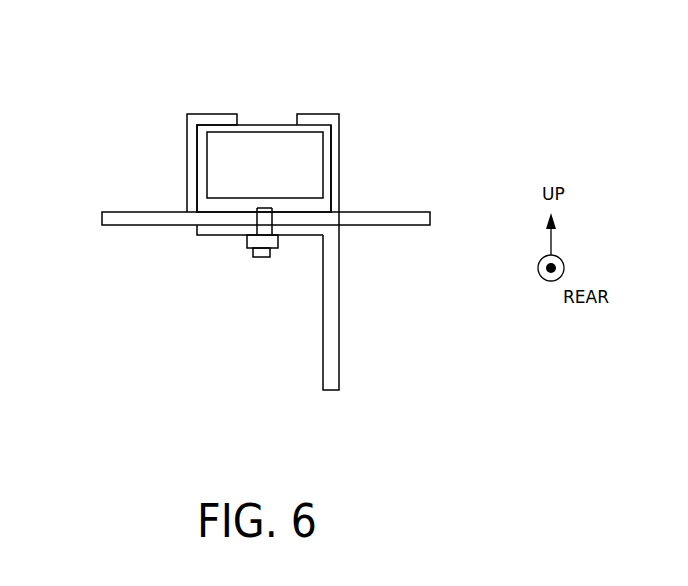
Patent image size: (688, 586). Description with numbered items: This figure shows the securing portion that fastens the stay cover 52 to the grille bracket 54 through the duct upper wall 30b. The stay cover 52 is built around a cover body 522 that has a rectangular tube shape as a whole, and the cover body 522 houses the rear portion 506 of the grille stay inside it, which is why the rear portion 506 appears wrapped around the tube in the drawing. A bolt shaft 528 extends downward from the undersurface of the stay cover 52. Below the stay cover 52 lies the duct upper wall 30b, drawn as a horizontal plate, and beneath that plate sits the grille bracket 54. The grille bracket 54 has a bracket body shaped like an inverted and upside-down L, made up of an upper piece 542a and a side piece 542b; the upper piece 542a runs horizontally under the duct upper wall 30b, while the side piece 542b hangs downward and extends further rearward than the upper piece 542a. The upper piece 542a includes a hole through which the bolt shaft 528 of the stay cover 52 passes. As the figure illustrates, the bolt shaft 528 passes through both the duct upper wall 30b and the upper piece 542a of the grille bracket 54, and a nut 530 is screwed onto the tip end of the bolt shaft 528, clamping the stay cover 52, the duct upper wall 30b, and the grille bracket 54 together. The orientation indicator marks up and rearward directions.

The stay cover 52 is at (333, 122).
The rear portion of the grille stay 506 is at (275, 122).
The cover body 522 is at (340, 155).
The duct upper wall 30b is at (133, 212).
The bolt shaft 528 is at (260, 224).
The nut 530 is at (258, 257).
The grille bracket 54 is at (336, 328).
The upper piece 542a is at (303, 236).
The side piece 542b is at (340, 323).